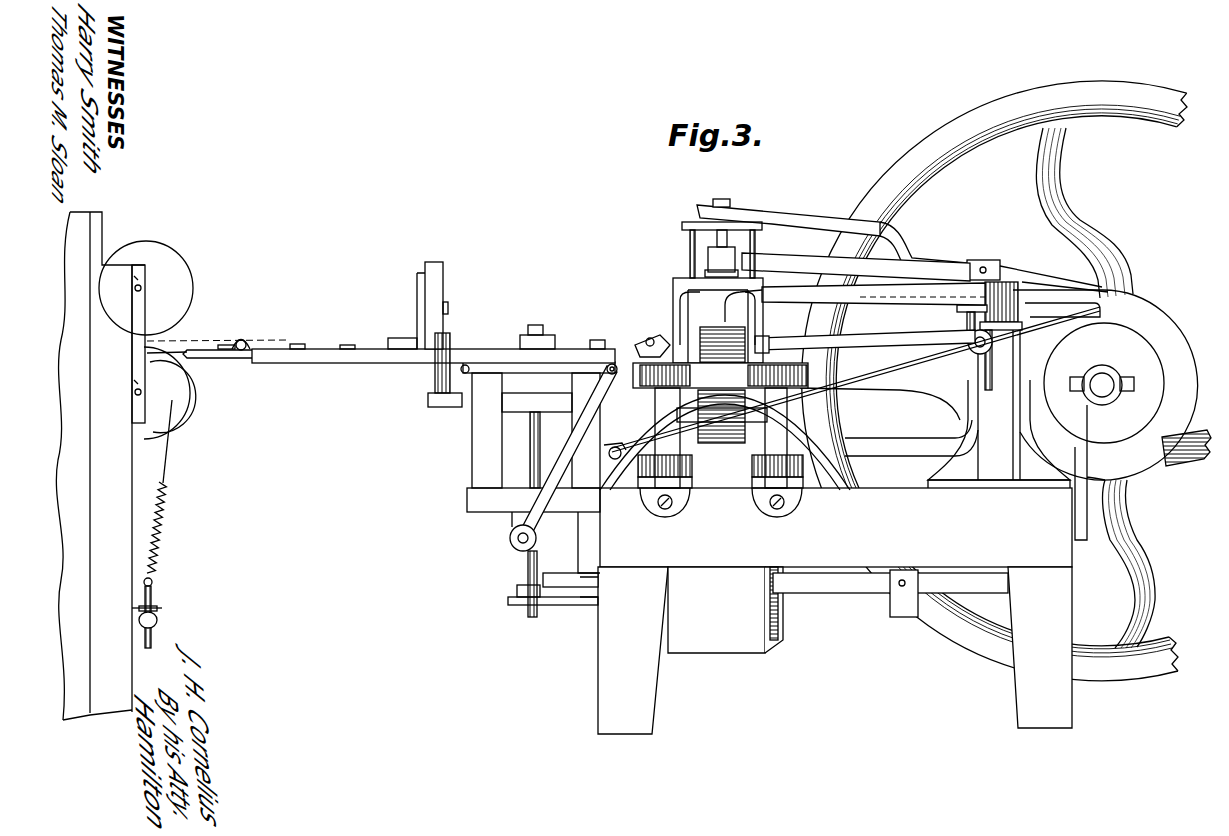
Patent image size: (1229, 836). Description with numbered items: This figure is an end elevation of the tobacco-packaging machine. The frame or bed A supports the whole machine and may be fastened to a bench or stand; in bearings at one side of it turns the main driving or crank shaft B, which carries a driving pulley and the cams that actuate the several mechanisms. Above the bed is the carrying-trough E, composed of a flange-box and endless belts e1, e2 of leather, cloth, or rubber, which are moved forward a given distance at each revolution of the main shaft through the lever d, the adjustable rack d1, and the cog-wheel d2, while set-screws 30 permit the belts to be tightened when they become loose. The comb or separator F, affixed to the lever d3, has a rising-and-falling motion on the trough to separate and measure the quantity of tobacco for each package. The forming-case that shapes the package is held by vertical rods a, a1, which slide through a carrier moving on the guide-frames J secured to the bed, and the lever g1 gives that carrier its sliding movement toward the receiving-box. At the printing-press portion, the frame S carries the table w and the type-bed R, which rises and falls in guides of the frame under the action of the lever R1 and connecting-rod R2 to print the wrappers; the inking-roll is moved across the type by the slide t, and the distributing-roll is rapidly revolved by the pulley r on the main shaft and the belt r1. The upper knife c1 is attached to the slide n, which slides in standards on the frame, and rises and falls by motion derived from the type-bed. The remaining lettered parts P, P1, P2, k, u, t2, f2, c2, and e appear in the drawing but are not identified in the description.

The frame or bed A is at (835, 611).
The upper feed roller P is at (146, 288).
The lever and lower feed roller P1 is at (378, 497).
The feed board P2 is at (109, 466).
The bearing pins k is at (137, 344).
The guide finger u is at (241, 337).
The table w is at (399, 354).
The slide n is at (425, 327).
The slide t is at (538, 372).
The pin t2 is at (614, 448).
The slide block f2 is at (537, 336).
The stop block c2 is at (597, 340).
The upper knife c1 is at (665, 348).
The frame S is at (533, 473).
The bed R is at (818, 389).
The lever R1 is at (758, 593).
The connecting-rod R2 is at (530, 450).
The gripper finger e is at (652, 339).
The endless belt e1 is at (722, 426).
The endless belt e2 is at (722, 416).
The carrying-trough E is at (720, 425).
The main driving or crank shaft B is at (722, 345).
The guide-frame J is at (717, 320).
The vertical rod a is at (719, 250).
The vertical rod a1 is at (764, 237).
The lever g1 is at (832, 236).
The lever d is at (999, 376).
The rack d1 is at (889, 422).
The cog-wheel d2 is at (912, 302).
The lever d3 is at (865, 341).
The pulley r is at (1112, 385).
The belt r1 is at (856, 379).
The comb or separator F is at (994, 381).
The set-screws 30 is at (721, 508).